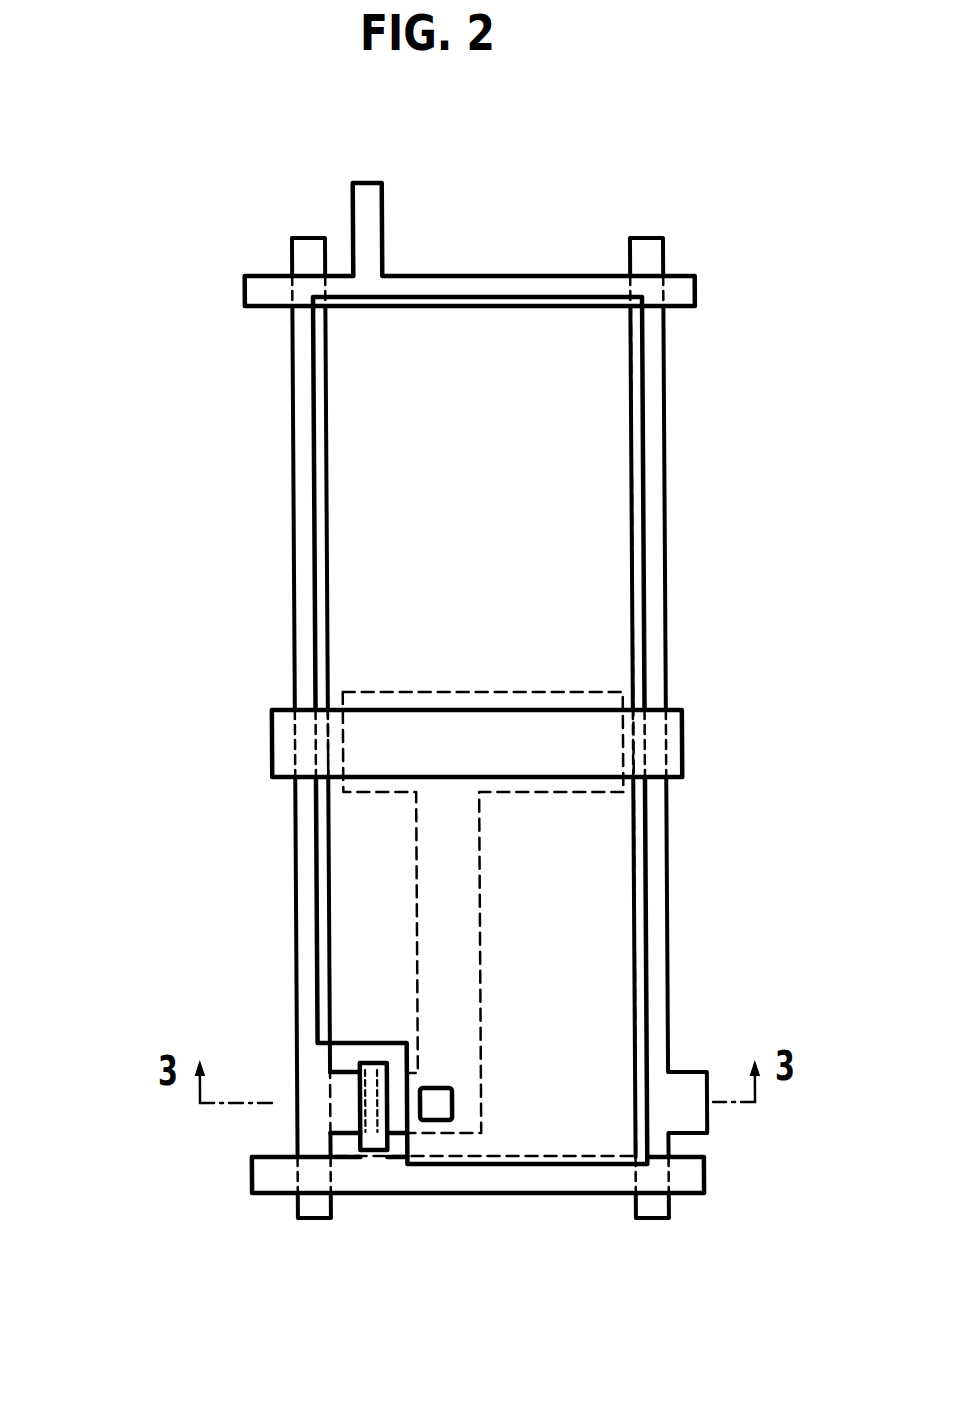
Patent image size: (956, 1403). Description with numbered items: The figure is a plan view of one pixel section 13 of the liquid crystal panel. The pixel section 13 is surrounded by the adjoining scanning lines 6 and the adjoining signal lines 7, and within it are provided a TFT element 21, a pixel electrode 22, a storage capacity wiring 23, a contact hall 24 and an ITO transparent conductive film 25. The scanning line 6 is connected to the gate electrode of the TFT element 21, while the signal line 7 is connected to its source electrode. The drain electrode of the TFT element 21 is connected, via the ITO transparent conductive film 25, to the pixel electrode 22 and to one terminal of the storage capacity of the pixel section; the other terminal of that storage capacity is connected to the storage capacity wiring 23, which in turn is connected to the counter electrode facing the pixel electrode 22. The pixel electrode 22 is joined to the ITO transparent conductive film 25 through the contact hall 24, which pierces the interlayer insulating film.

The pixel section 13 is at (174, 274).
The signal line 7 is at (291, 871).
The scanning line 6 is at (368, 1177).
The pixel electrode 22 is at (604, 465).
The storage capacity wiring 23 is at (668, 738).
The ITO transparent conductive film 25 is at (452, 963).
The TFT element 21 is at (366, 1102).
The contact hall 24 is at (430, 1108).